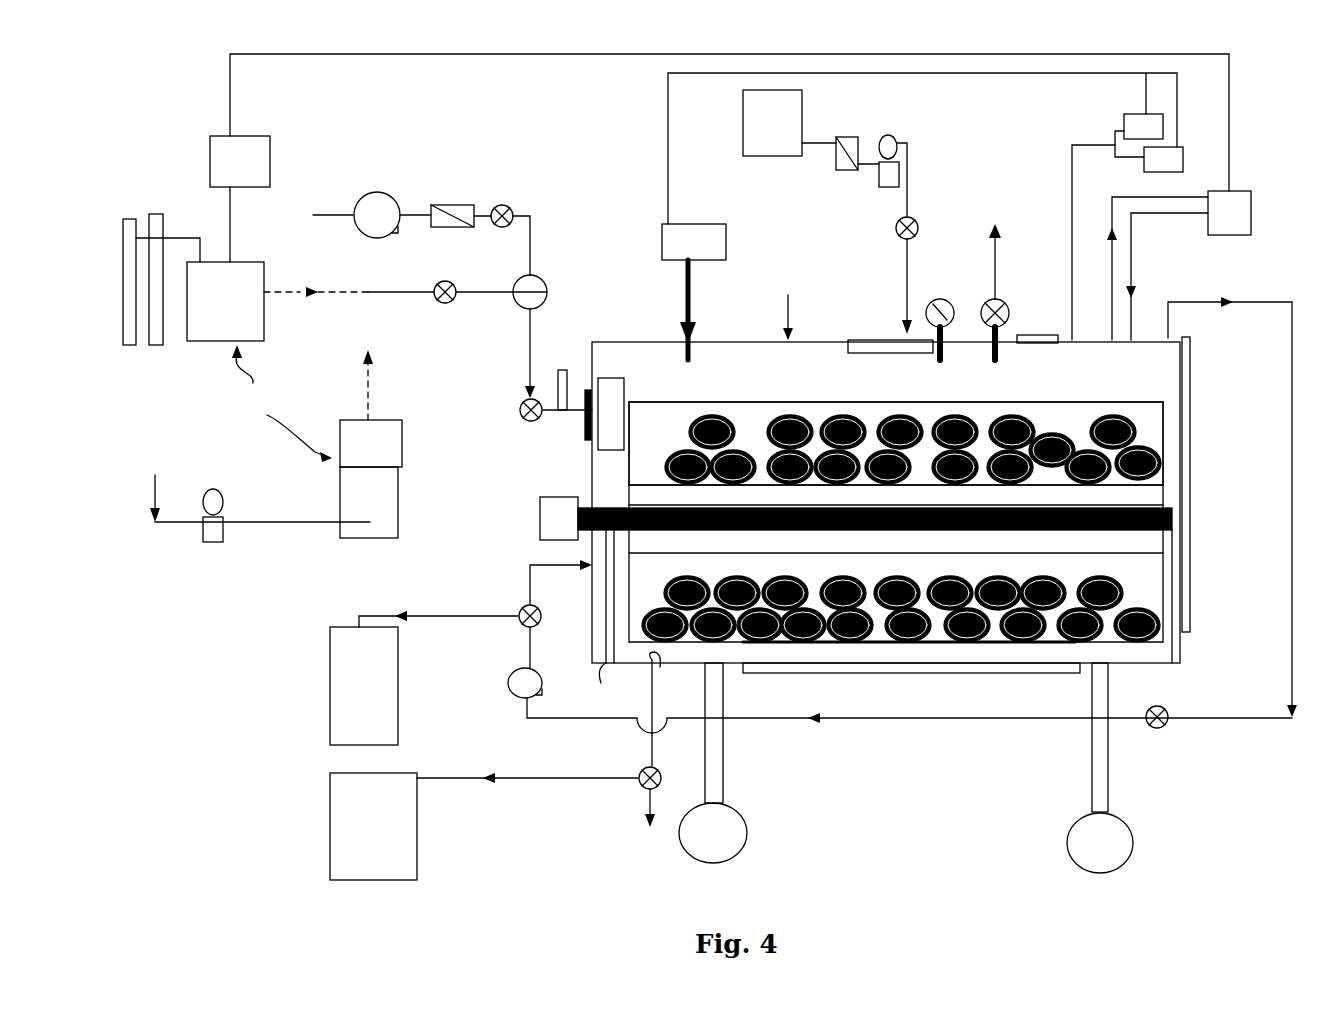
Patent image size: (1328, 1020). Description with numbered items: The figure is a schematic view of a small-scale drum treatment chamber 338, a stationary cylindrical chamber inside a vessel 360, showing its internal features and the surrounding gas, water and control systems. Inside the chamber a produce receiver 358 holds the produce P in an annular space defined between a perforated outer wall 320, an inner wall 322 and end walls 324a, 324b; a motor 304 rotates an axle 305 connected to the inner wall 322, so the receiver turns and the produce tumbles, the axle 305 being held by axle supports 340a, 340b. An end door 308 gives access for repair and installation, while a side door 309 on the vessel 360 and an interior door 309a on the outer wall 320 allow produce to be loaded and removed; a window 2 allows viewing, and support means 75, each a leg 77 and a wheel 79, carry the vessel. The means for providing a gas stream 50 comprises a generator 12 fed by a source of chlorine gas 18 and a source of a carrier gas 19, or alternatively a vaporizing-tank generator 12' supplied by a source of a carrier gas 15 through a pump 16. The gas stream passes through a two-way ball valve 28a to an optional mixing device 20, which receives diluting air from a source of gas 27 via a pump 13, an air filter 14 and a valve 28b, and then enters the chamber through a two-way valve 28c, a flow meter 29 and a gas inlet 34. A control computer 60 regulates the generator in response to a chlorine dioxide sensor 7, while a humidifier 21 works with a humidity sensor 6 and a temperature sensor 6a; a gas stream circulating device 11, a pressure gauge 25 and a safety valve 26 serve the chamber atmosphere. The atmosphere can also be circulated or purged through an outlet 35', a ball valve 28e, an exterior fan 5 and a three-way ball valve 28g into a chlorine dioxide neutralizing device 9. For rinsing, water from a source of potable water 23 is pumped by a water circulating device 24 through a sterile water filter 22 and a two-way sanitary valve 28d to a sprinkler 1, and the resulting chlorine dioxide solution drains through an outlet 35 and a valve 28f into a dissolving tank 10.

The sprinkler 1 is at (872, 350).
The window 2 is at (1037, 324).
The exterior fan 5 is at (545, 684).
The humidity sensor 6 is at (1183, 160).
The temperature sensor 6a is at (1163, 130).
The chlorine dioxide sensor 7 is at (1251, 213).
The chlorine dioxide neutralizing device 9 is at (398, 670).
The dissolving tank 10 is at (417, 840).
The gas stream circulating device 11 is at (886, 507).
The generator 12 is at (225, 301).
The generator 12' is at (371, 479).
The pump 13 is at (384, 188).
The air filter 14 is at (455, 205).
The source of a carrier gas 15 is at (256, 481).
The pump 16 is at (222, 490).
The source of chlorine gas 18 is at (123, 245).
The source of a carrier gas 19 is at (163, 228).
The mixing device 20 is at (547, 294).
The humidifier 21 is at (700, 256).
The sterile water filter 22 is at (853, 137).
The source of potable water 23 is at (782, 134).
The water circulating device 24 is at (904, 122).
The pressure gauge 25 is at (940, 314).
The safety valve 26 is at (1002, 292).
The source of gas 27 is at (316, 214).
The two-way ball valve 28a is at (444, 282).
The valve 28b is at (504, 205).
The two-way valve 28c is at (523, 402).
The two-way sanitary valve 28d is at (896, 228).
The ball valve 28e is at (1163, 732).
The valve 28f is at (645, 790).
The three-way ball valve 28g is at (540, 624).
The flow meter 29 is at (562, 370).
The gas inlet 34 is at (585, 430).
The outlet 35 is at (667, 709).
The outlet 35' is at (1231, 492).
The means for providing a gas stream 50 is at (302, 403).
The control computer 60 is at (244, 172).
The support means 75 is at (741, 792).
The leg 77 is at (723, 760).
The wheel 79 is at (746, 840).
The produce P is at (673, 453).
The motor 304 is at (540, 525).
The axle 305 is at (613, 507).
The end door 308 is at (1190, 383).
The side door 309 is at (895, 660).
The interior door 309a is at (1055, 645).
The outer wall 320 is at (1163, 401).
The inner wall 322 is at (1150, 482).
The end wall 324a is at (629, 465).
The end wall 324b is at (1172, 545).
The drum treatment chamber 338 is at (723, 356).
The axle support 340a is at (604, 680).
The axle support 340b is at (1172, 656).
The produce receiver 358 is at (1066, 398).
The vessel 360 is at (785, 307).